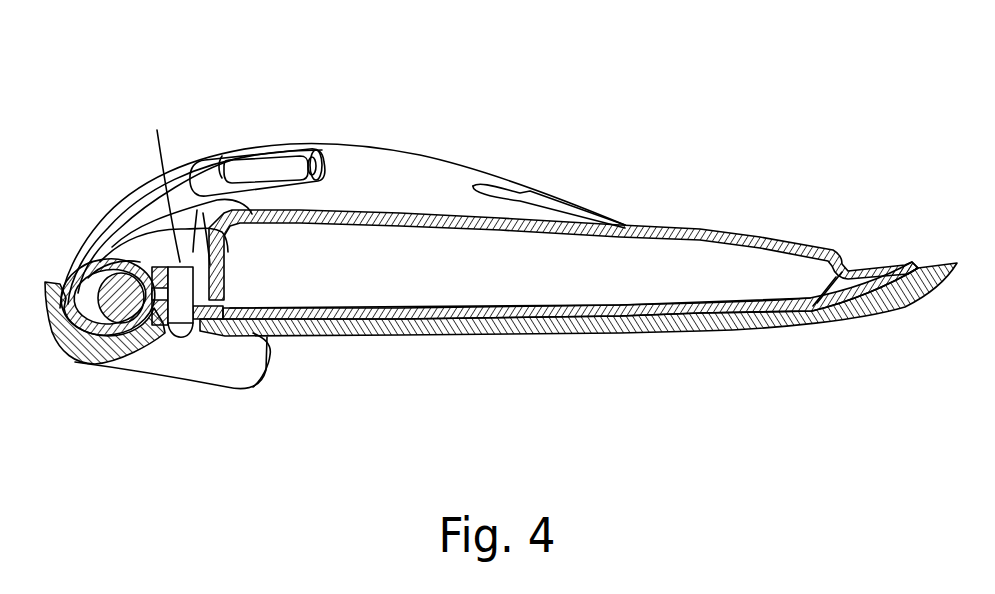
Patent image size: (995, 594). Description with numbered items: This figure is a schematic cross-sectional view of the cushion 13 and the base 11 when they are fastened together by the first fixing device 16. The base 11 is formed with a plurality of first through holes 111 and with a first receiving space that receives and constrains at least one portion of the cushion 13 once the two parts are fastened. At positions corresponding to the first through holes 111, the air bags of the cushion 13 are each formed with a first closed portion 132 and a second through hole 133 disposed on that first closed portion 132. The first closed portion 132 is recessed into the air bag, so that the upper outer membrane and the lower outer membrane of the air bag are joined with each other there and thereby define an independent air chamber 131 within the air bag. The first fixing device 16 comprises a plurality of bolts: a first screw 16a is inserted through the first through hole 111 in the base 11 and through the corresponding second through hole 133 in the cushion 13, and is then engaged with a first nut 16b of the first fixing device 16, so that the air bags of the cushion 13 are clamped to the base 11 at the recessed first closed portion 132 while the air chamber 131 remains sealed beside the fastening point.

The base 11 is at (431, 337).
The first through hole 111 is at (167, 325).
The cushion 13 is at (652, 225).
The independent air chamber 131 is at (578, 278).
The first closed portion 132 is at (221, 320).
The second through hole 133 is at (212, 252).
The first fixing device 16 is at (117, 178).
The first screw 16a is at (178, 280).
The first nut 16b is at (150, 268).